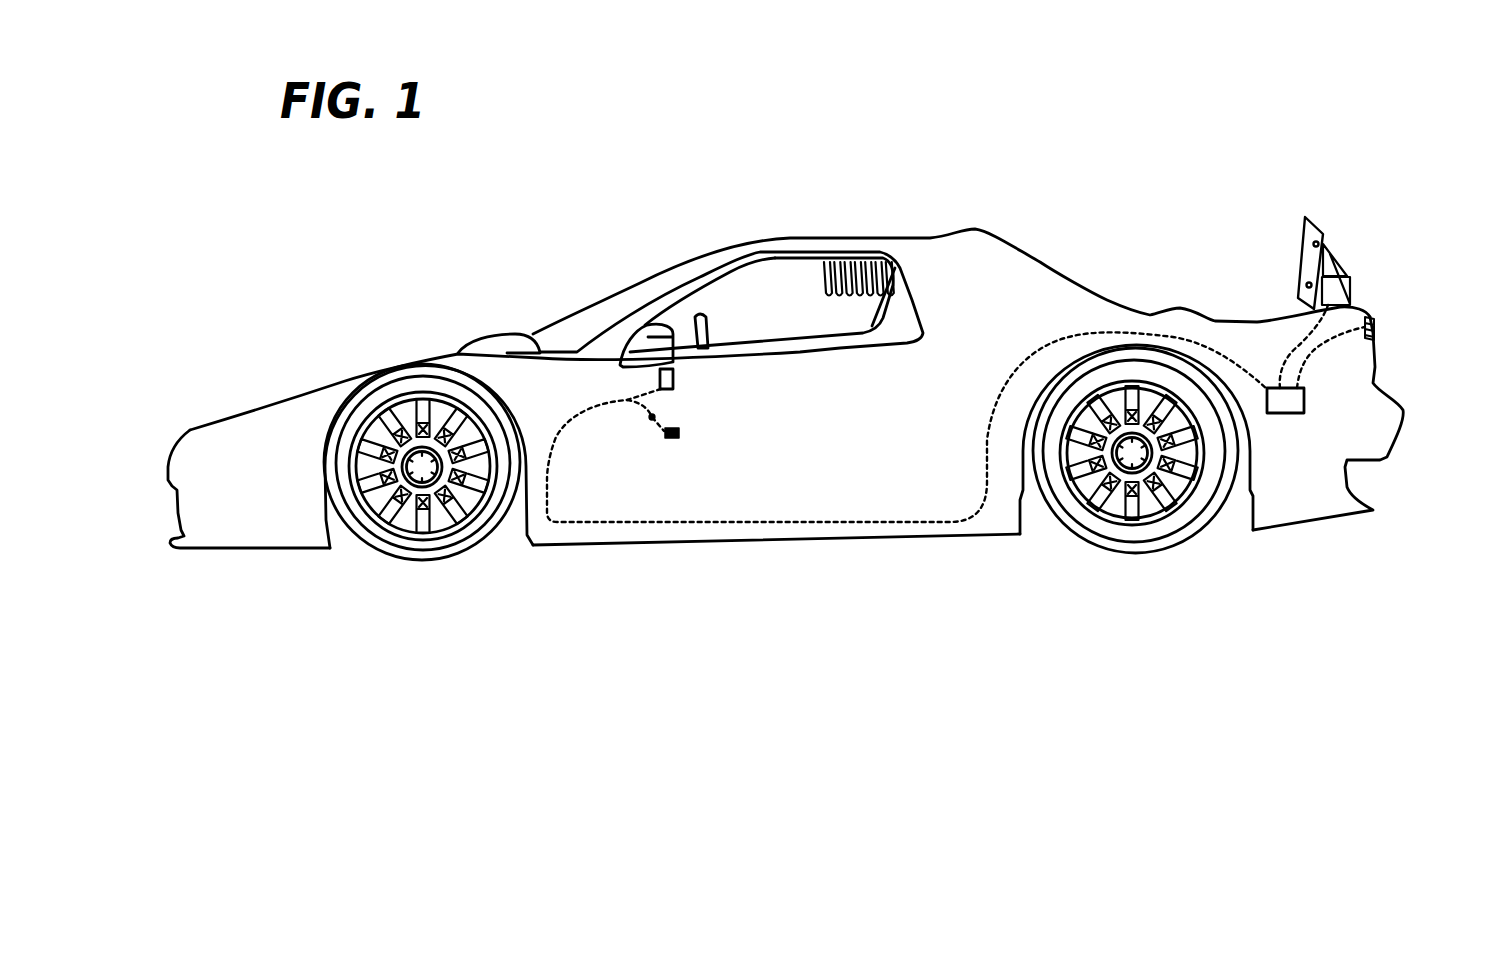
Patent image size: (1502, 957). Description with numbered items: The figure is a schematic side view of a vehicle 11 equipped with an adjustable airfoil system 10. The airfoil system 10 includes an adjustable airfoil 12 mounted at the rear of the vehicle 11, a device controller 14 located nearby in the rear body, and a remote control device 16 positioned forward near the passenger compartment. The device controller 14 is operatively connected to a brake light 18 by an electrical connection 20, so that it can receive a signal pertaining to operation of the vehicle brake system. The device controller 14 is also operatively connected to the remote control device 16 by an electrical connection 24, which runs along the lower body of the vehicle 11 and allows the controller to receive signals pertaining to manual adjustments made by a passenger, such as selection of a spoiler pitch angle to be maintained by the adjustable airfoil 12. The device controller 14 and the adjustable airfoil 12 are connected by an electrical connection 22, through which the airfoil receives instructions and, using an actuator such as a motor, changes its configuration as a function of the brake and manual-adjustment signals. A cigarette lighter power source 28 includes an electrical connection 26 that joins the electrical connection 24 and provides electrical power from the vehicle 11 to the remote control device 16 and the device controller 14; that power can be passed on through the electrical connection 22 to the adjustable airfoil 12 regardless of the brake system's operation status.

The adjustable airfoil system 10 is at (1329, 209).
The vehicle 11 is at (252, 410).
The adjustable airfoil 12 is at (1329, 244).
The device controller 14 is at (1285, 401).
The remote control device 16 is at (665, 377).
The brake light 18 is at (1375, 322).
The electrical connection 20 is at (1320, 353).
The electrical connection 22 is at (1290, 353).
The electrical connection 24 is at (877, 520).
The electrical connection 26 is at (652, 417).
The cigarette lighter power source 28 is at (678, 436).